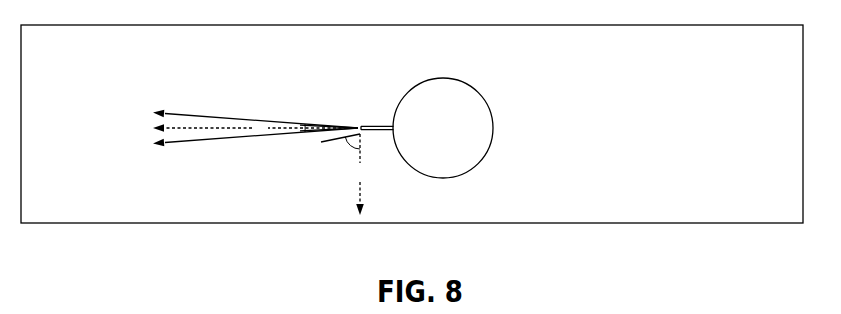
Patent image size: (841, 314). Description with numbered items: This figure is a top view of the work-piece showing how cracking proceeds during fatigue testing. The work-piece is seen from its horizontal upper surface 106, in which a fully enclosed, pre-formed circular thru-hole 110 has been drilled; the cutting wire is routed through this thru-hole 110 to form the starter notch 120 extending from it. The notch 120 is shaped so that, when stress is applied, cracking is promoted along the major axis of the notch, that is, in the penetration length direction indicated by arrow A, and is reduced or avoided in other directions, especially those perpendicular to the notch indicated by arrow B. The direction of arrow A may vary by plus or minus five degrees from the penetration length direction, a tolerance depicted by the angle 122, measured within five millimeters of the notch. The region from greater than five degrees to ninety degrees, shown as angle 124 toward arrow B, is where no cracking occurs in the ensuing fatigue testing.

The horizontal (upper) surface 106 is at (93, 200).
The thru-hole 110 is at (448, 115).
The notch 120 is at (377, 121).
The angle 122 is at (300, 141).
The angle 124 is at (343, 152).